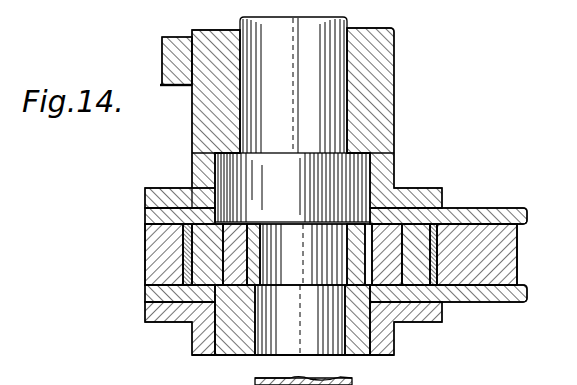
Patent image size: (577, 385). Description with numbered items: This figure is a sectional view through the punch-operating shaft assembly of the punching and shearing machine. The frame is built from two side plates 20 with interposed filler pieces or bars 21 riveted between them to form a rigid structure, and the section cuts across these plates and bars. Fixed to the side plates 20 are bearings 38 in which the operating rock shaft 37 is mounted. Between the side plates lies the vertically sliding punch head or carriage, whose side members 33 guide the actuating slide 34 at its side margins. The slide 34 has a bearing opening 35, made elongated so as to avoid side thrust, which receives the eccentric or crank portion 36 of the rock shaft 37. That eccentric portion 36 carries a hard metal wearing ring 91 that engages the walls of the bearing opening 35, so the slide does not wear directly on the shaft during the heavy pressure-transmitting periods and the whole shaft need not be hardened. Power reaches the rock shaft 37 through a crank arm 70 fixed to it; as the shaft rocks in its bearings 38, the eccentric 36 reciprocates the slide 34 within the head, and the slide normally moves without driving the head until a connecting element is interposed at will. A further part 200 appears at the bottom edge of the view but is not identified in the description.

The side plates 20 is at (489, 204).
The filler pieces or bars 21 is at (318, 277).
The side members 33 is at (200, 266).
The actuating slide 34 is at (181, 248).
The bearing opening 35 is at (368, 266).
The eccentric or crank portion 36 is at (293, 186).
The operating rock shaft 37 is at (373, 362).
The bearings 38 is at (168, 189).
The crank arm 70 is at (164, 58).
The hard metal wearing rings 91 is at (350, 243).
The base member 200 is at (268, 380).